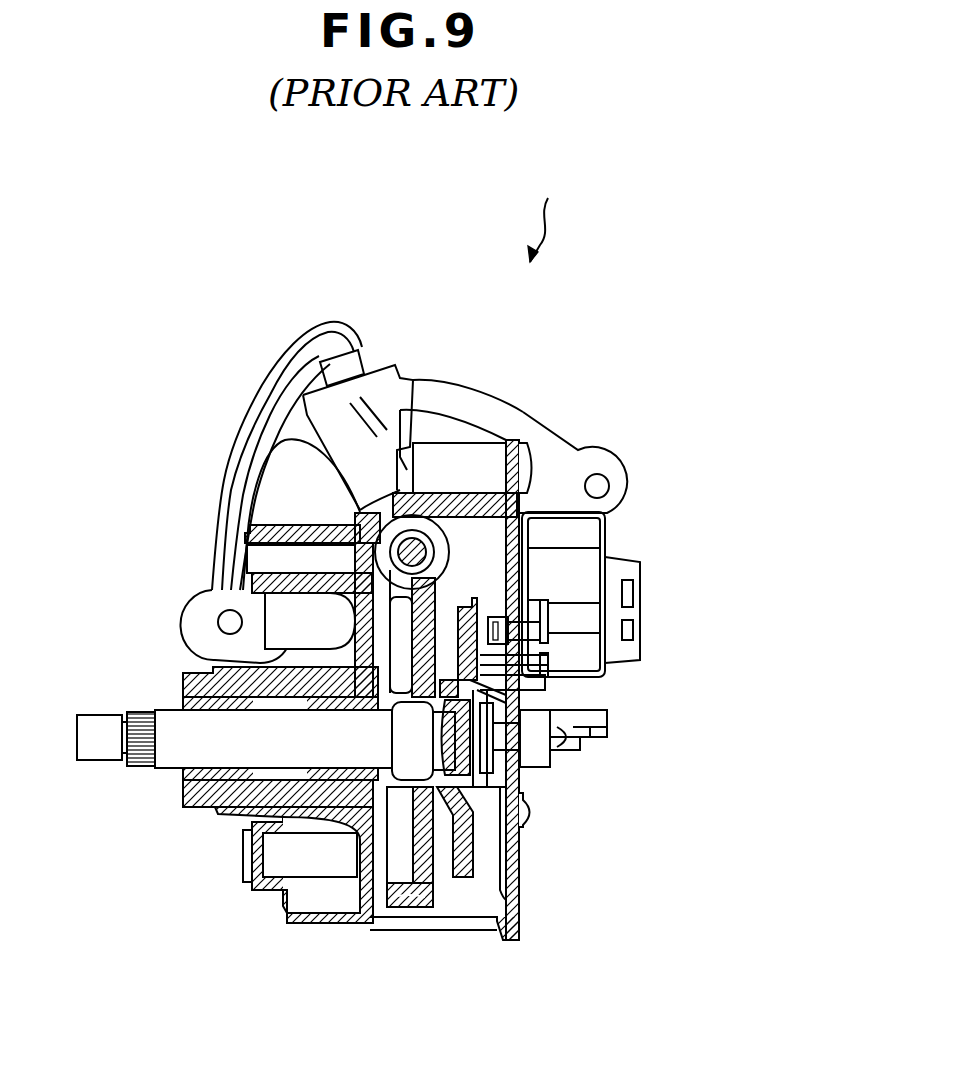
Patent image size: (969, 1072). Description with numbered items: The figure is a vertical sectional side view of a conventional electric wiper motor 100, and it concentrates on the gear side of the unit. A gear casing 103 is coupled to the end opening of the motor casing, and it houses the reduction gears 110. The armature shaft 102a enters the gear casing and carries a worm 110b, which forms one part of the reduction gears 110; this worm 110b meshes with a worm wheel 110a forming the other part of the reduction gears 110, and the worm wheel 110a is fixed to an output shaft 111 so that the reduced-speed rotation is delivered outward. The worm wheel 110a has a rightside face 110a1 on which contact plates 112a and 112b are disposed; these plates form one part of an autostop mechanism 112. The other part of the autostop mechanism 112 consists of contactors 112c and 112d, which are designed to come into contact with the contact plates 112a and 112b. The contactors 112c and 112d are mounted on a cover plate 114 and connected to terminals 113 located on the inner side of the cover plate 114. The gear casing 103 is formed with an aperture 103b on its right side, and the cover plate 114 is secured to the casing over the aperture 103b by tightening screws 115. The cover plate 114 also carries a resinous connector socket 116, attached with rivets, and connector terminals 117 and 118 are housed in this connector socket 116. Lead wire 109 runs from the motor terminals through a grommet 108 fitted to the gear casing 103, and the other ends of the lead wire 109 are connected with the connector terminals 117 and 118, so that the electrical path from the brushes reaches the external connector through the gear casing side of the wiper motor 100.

The wiper motor 100 is at (612, 198).
The armature shaft 102a is at (425, 518).
The gear casing 103 is at (493, 437).
The aperture 103b is at (490, 853).
The grommet 108 is at (405, 362).
The lead wire 109 is at (347, 322).
The reduction gears 110 is at (380, 580).
The worm wheel 110a is at (407, 907).
The rightside face 110a1 is at (433, 865).
The worm 110b is at (412, 552).
The output shaft 111 is at (193, 737).
The autostop mechanism 112 is at (484, 606).
The contact plate 112a is at (520, 673).
The contact plate 112b is at (570, 740).
The contactor 112c is at (548, 615).
The contactor 112d is at (545, 680).
The terminals 113 is at (645, 640).
The cover plate 114 is at (519, 873).
The screws 115 is at (530, 455).
The connector socket 116 is at (613, 512).
The connector terminal 117 is at (552, 635).
The connector terminal 118 is at (605, 655).